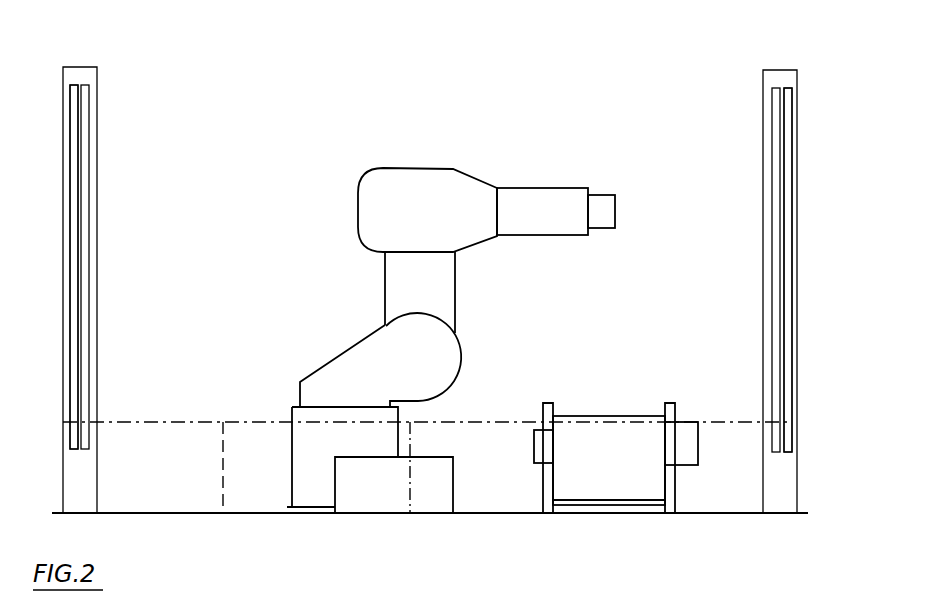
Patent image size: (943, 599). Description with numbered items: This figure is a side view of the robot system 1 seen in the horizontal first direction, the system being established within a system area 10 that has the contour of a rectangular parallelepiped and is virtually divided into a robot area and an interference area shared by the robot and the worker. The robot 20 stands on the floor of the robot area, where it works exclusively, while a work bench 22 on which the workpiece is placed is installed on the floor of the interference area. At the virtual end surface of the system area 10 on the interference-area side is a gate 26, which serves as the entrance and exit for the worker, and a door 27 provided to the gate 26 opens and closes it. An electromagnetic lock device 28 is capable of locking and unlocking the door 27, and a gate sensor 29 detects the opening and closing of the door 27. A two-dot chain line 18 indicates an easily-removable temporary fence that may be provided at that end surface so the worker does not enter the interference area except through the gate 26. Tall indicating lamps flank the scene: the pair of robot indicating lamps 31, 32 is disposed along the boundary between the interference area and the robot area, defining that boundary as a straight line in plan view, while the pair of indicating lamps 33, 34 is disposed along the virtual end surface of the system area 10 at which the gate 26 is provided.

The robot system 1 is at (236, 80).
The system area 10 is at (695, 195).
The two-dot chain line 18 is at (210, 500).
The robot 20 is at (496, 168).
The work bench 22 is at (334, 496).
The gate 26 is at (604, 405).
The door 27 is at (618, 506).
The electromagnetic lock device 28 is at (699, 452).
The gate sensor 29 is at (534, 447).
The indicating lamp 31 is at (86, 67).
The indicating lamp 32 is at (778, 70).
The indicating lamp 33 is at (74, 267).
The indicating lamp 34 is at (788, 270).